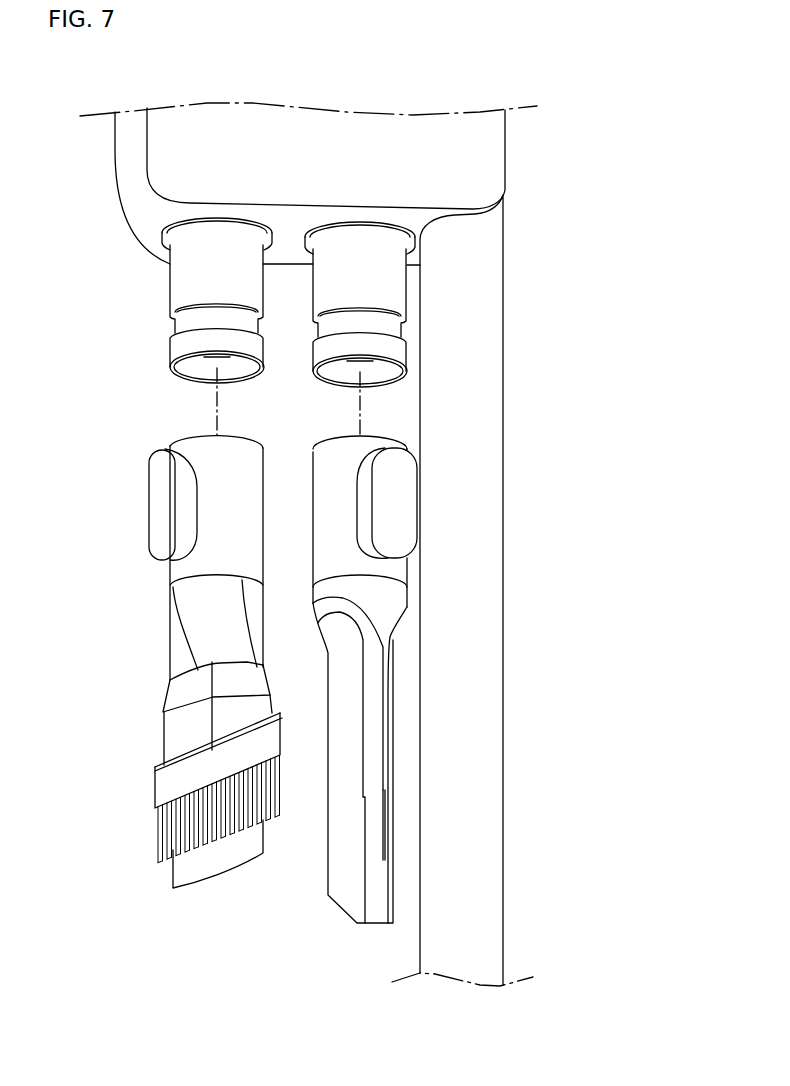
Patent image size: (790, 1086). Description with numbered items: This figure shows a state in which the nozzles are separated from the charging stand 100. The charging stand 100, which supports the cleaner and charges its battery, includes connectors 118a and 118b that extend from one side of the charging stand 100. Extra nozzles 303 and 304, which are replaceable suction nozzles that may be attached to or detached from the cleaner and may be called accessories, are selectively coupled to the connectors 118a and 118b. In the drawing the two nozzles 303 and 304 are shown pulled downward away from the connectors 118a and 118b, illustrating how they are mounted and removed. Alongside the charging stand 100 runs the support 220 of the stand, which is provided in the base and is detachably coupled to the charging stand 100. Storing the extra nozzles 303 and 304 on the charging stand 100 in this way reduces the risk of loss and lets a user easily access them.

The charging stand 100 is at (370, 133).
The connector 118a is at (188, 282).
The connector 118b is at (392, 275).
The support 220 is at (482, 420).
The extra nozzle 303 is at (197, 605).
The extra nozzle 304 is at (390, 597).